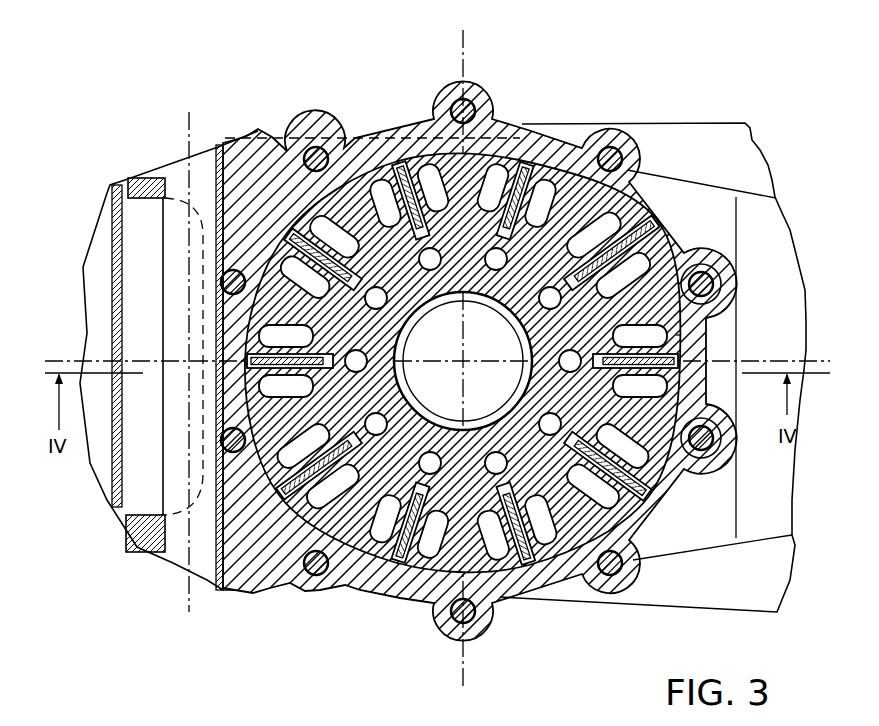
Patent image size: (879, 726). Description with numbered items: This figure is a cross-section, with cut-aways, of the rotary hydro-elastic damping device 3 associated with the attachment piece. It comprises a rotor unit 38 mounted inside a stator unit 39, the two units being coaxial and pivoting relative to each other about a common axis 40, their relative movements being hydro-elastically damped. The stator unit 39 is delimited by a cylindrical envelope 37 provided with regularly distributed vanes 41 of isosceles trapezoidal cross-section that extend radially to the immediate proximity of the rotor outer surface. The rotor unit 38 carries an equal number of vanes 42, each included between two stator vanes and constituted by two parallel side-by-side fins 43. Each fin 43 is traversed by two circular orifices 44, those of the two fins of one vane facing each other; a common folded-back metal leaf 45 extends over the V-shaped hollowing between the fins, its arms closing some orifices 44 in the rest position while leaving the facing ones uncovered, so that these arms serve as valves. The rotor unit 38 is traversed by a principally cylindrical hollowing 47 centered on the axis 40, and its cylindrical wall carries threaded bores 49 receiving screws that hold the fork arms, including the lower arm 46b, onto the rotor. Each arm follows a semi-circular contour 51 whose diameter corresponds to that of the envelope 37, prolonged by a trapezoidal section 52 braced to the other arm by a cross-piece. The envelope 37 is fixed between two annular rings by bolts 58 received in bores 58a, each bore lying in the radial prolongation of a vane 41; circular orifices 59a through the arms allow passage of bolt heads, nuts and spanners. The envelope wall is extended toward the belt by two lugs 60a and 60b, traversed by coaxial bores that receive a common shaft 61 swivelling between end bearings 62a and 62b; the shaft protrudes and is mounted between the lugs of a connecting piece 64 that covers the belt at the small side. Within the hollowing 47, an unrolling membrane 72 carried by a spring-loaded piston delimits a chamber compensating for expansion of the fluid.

The damping device 3 is at (623, 96).
The cylindrical envelope 37 is at (684, 238).
The rotor unit 38 is at (680, 335).
The stator unit 39 is at (545, 148).
The common axis 40 is at (462, 368).
The vanes 41 is at (380, 135).
The vanes 42 is at (625, 563).
The fins 43 is at (650, 492).
The circular orifices 44 is at (634, 175).
The folded-back metal leaf 45 is at (505, 150).
The lower arm of fork 46b is at (763, 506).
The hollowing 47 is at (500, 340).
The threaded bores 49 is at (355, 540).
The semi-circular contour 51 is at (291, 140).
The trapezoidal section 52 is at (775, 238).
The bolts 58 is at (222, 285).
The bores 58a is at (143, 356).
The circular orifices 59a is at (710, 354).
The lug 60a is at (130, 178).
The lug 60b is at (133, 530).
The shaft 61 is at (203, 165).
The end bearing 62a is at (143, 182).
The end bearing 62b is at (145, 556).
The connecting piece 64 is at (112, 250).
The unrolling membrane 72 is at (405, 338).